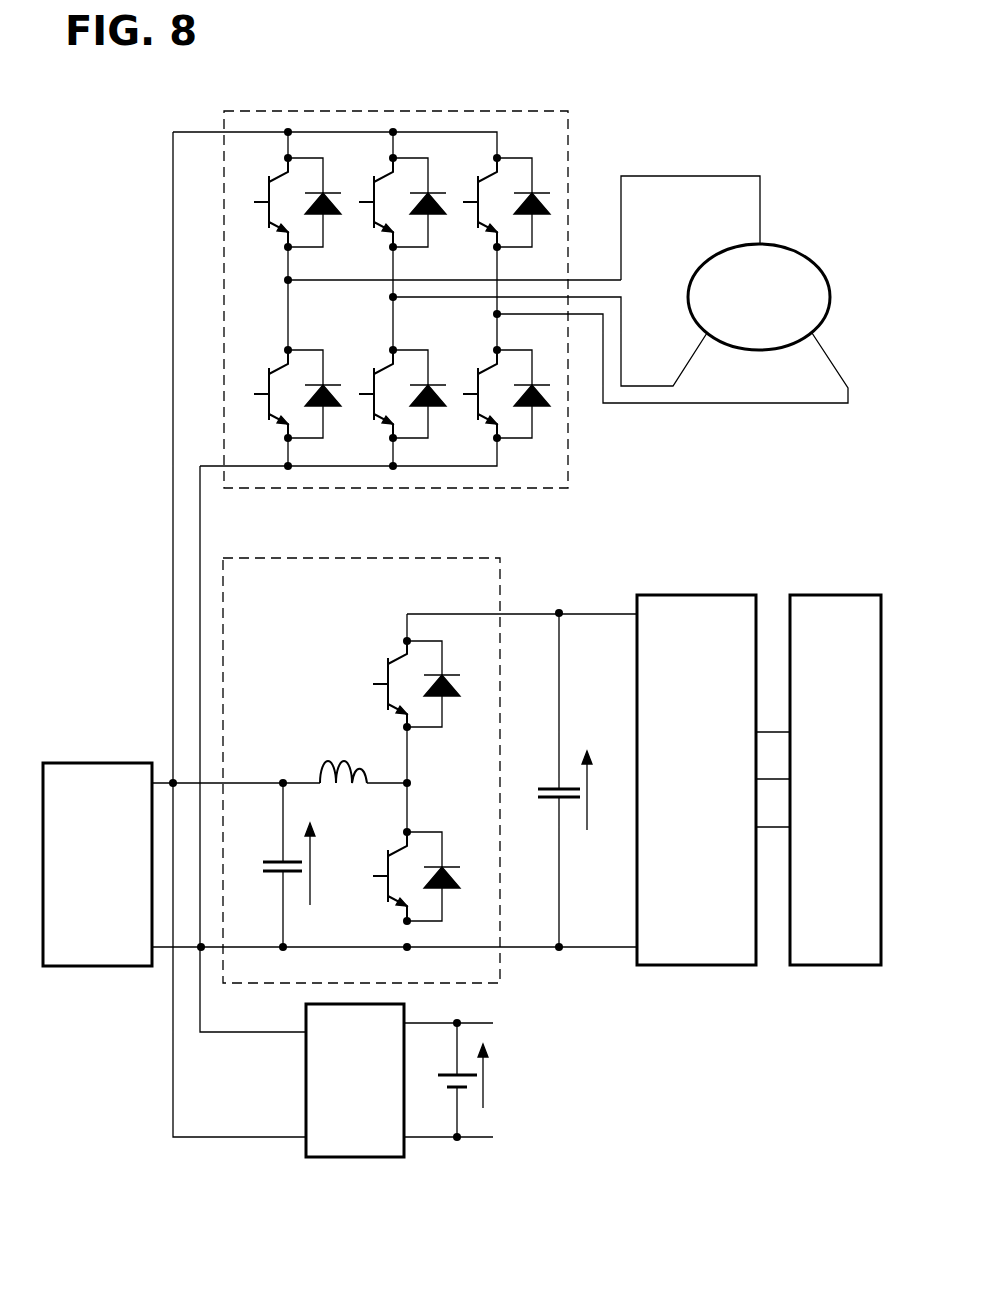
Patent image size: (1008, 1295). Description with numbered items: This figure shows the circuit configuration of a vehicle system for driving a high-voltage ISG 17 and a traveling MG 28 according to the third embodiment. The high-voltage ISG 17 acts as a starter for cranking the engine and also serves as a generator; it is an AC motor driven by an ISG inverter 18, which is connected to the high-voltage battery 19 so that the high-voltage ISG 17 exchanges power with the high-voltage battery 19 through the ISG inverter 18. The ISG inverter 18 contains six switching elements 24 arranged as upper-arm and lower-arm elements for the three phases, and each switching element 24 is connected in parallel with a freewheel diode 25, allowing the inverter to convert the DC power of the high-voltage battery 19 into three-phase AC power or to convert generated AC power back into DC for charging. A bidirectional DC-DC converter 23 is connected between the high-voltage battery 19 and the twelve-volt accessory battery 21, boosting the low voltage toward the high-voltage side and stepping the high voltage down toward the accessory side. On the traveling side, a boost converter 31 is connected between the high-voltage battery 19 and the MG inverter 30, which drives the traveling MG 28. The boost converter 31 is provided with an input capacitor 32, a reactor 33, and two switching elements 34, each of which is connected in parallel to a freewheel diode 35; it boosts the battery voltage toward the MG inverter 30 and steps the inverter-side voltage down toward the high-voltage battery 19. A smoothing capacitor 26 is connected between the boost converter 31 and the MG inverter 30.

The high-voltage ISG 17 is at (805, 252).
The ISG inverter 18 is at (396, 270).
The high-voltage battery 19 is at (97, 762).
The accessory battery 21 is at (467, 1090).
The bidirectional DC-DC converter 23 is at (357, 1158).
The switching element 24 is at (270, 222).
The freewheel diode 25 is at (345, 207).
The smoothing capacitor 26 is at (542, 785).
The traveling MG 28 is at (838, 967).
The MG inverter 30 is at (697, 967).
The boost converter 31 is at (361, 741).
The input capacitor 32 is at (263, 860).
The reactor 33 is at (328, 752).
The switching element 34 is at (386, 672).
The freewheel diode 35 is at (461, 690).